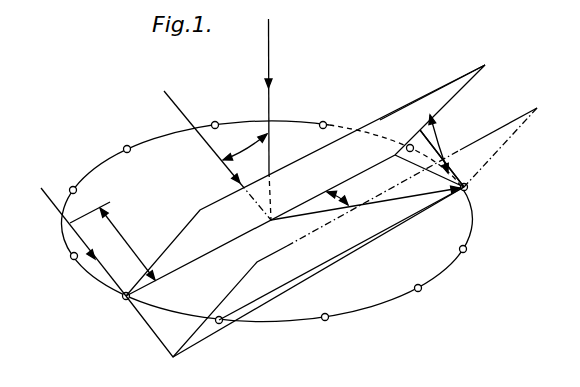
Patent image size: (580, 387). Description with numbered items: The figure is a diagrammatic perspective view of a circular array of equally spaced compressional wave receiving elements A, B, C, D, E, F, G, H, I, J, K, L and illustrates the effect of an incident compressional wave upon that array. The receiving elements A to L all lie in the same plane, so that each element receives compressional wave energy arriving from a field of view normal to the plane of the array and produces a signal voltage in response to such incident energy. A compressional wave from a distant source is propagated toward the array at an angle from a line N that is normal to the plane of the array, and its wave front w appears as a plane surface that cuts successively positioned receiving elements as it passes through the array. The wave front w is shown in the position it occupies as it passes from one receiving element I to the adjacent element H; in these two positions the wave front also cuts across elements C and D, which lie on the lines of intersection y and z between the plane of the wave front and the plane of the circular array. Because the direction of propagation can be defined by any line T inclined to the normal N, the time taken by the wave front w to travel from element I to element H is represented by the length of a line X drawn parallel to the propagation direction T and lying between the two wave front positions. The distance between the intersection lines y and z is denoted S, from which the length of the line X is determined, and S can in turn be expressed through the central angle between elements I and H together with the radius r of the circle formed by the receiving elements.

The compressional wave receiving element A is at (66, 188).
The compressional wave receiving element B is at (66, 258).
The compressional wave receiving element C is at (121, 305).
The compressional wave receiving element D is at (213, 329).
The compressional wave receiving element E is at (324, 327).
The compressional wave receiving element F is at (419, 297).
The compressional wave receiving element G is at (468, 259).
The compressional wave receiving element H is at (473, 192).
The compressional wave receiving element I is at (409, 136).
The compressional wave receiving element J is at (323, 114).
The compressional wave receiving element K is at (213, 115).
The compressional wave receiving element L is at (122, 140).
The line normal to the plane of the array N is at (268, 111).
The direction of propagation line T is at (150, 187).
The line of intersection y is at (207, 256).
The wave front w is at (432, 93).
The line of intersection z is at (340, 255).
The radius of the circle r is at (403, 199).
The distance between plane intersection lines S is at (412, 165).
The line parallel to the direction of propagation X is at (450, 170).